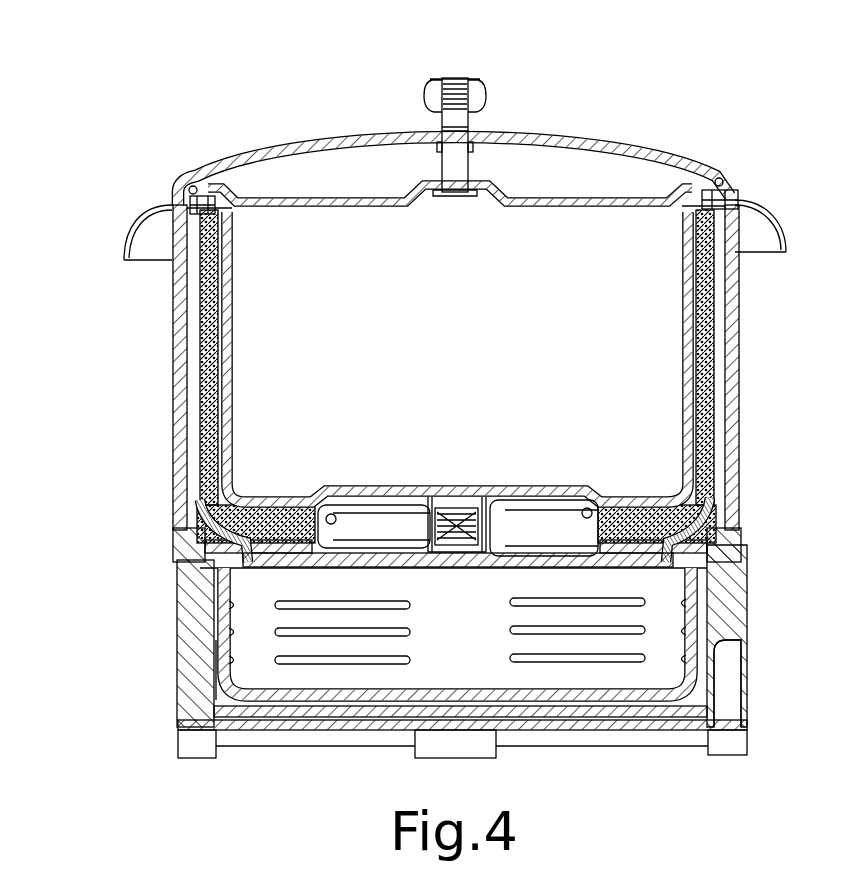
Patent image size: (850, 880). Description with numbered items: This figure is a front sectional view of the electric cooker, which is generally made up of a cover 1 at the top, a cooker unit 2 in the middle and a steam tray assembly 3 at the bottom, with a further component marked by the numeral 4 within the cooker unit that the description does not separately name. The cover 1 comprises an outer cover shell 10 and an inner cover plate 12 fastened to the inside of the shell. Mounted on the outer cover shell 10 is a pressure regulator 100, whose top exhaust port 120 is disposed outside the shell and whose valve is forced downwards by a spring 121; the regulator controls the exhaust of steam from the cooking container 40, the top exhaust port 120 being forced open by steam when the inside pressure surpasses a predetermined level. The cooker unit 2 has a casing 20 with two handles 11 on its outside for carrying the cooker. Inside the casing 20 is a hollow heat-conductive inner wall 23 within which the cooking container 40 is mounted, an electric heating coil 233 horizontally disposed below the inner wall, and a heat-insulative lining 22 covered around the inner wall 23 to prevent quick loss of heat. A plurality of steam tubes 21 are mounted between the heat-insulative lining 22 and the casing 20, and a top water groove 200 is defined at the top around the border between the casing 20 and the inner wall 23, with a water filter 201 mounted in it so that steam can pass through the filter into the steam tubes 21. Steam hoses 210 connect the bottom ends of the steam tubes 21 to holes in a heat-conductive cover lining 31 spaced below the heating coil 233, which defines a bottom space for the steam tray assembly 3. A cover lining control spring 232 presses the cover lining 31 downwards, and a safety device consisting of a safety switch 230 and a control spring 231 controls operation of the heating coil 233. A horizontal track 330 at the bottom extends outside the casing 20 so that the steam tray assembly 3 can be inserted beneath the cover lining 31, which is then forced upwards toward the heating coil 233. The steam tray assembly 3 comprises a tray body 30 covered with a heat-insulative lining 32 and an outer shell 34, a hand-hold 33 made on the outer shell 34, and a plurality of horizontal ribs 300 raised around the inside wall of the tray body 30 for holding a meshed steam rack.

The cover 1 is at (653, 64).
The outer cover shell 10 is at (666, 134).
The handles 11 is at (140, 214).
The inner cover plate 12 is at (350, 196).
The pressure regulator 100 is at (425, 92).
The top exhaust port 120 is at (463, 79).
The spring 121 is at (470, 104).
The top water groove 200 is at (723, 178).
The water filter 201 is at (738, 193).
The cooker unit 2 is at (762, 376).
The casing 20 is at (177, 409).
The steam tubes 21 is at (718, 427).
The heat-insulative lining 22 is at (700, 488).
The hollow heat-conductive inner wall 23 is at (217, 333).
The steam hoses 210 is at (743, 530).
The safety switch 230 is at (450, 500).
The control spring 231 is at (475, 502).
The cover lining control spring 232 is at (445, 513).
The electric heating coil 233 is at (360, 517).
The inner pot 4 is at (654, 352).
The cooking container 40 is at (684, 312).
The steam tray assembly 3 is at (785, 722).
The tray body 30 is at (706, 613).
The heat-conductive cover lining 31 is at (575, 550).
The heat-insulative lining 32 is at (710, 575).
The hand-hold 33 is at (745, 667).
The outer shell 34 is at (210, 675).
The horizontal ribs 300 is at (195, 610).
The horizontal track 330 is at (697, 712).